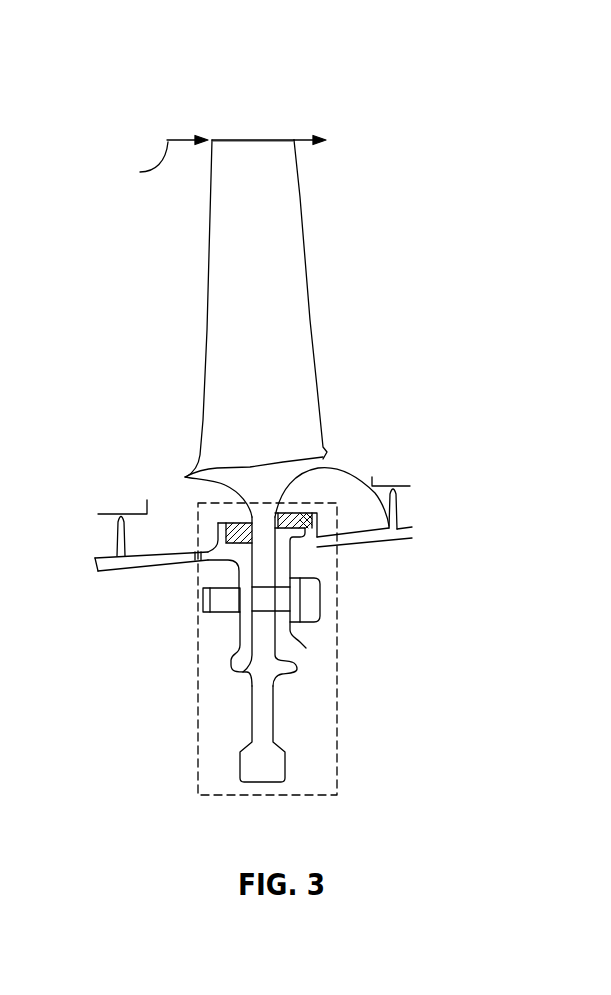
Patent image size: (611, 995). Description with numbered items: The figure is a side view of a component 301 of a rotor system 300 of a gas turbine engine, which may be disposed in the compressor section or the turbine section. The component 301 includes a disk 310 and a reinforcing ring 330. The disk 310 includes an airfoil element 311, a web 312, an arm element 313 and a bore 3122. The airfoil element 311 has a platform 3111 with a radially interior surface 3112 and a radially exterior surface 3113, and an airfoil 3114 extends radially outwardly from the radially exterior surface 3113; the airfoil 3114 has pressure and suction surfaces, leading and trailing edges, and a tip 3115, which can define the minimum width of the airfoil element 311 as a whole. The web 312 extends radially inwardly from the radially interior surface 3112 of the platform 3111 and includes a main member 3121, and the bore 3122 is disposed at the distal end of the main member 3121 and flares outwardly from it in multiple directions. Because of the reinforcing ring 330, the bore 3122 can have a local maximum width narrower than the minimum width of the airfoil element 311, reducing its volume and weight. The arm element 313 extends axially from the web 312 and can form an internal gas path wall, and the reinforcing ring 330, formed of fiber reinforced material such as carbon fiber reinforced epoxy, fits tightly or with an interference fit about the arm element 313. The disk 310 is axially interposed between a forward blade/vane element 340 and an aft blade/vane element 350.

The rotor system 300 is at (329, 74).
The component 301 is at (228, 131).
The disk 310 is at (262, 783).
The airfoil element 311 is at (186, 476).
The platform 3111 is at (186, 474).
The radially interior surface 3112 is at (399, 511).
The radially exterior surface 3113 is at (298, 455).
The airfoil 3114 is at (240, 248).
The tip 3115 is at (255, 137).
The web 312 is at (238, 741).
The main member 3121 is at (257, 608).
The bore 3122 is at (250, 769).
The arm element 313 is at (100, 571).
The reinforcing ring 330 is at (313, 522).
The forward blade/vane element 340 is at (138, 511).
The aft blade/vane element 350 is at (375, 486).